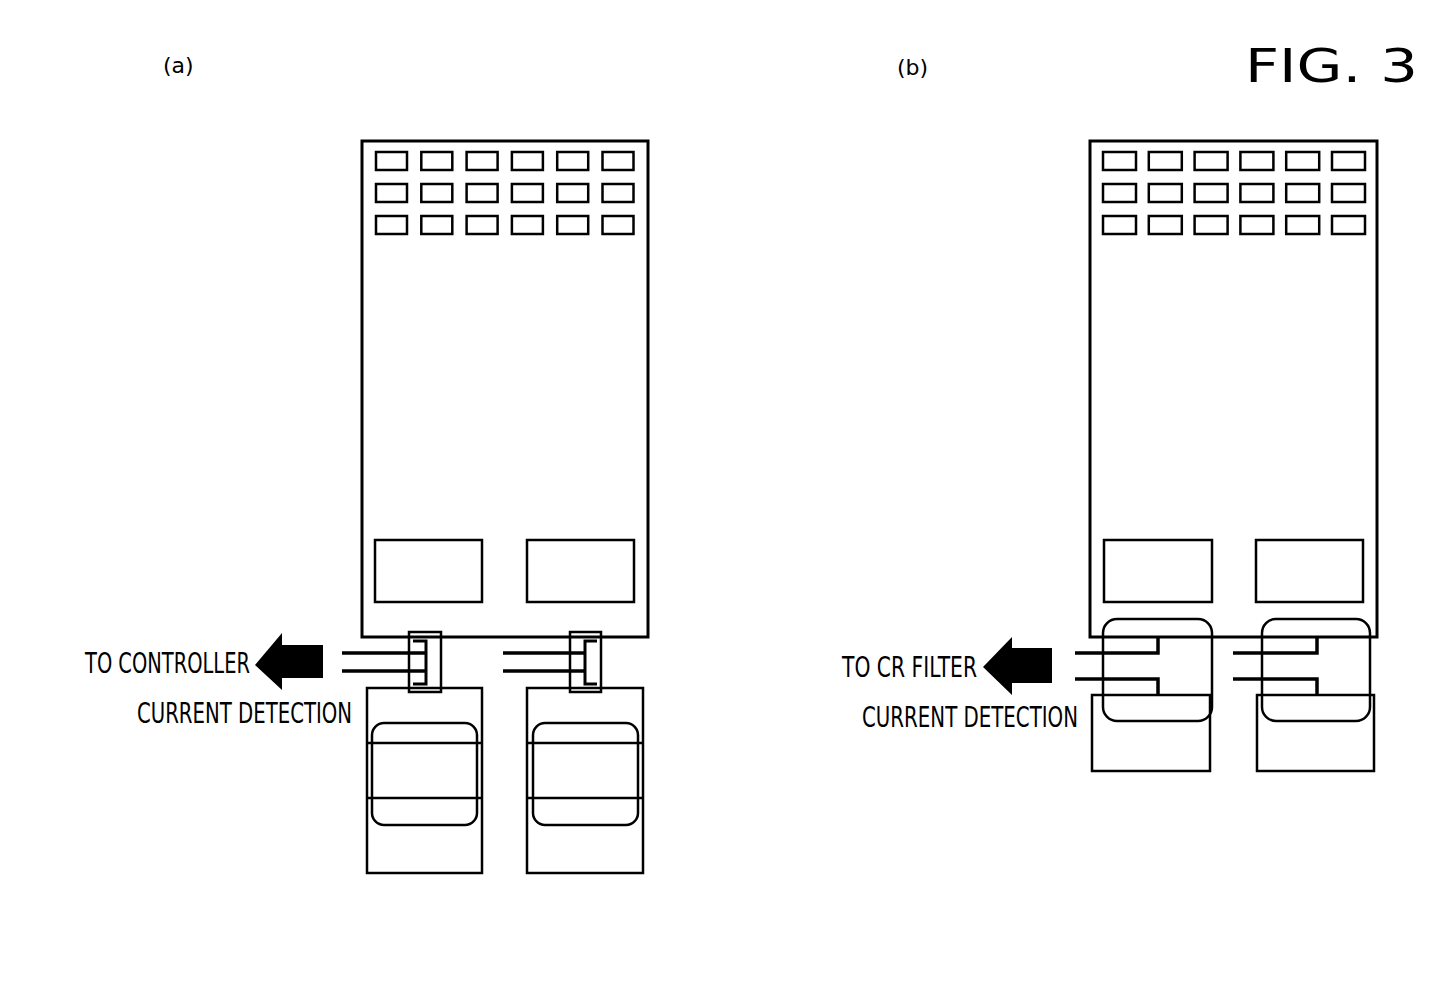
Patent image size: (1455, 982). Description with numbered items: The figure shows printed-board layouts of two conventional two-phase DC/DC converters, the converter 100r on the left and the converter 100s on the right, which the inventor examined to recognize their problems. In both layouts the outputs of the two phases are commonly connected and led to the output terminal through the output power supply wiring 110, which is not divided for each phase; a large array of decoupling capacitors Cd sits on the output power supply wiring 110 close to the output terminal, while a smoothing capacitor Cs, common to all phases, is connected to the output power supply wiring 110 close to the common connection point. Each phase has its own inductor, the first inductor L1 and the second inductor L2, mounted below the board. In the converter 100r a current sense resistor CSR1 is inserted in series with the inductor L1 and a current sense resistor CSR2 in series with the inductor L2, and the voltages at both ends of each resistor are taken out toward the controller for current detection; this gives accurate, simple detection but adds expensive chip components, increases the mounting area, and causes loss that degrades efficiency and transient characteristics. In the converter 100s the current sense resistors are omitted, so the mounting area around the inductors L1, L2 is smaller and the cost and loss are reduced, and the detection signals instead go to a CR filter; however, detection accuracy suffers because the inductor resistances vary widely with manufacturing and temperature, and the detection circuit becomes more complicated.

The output power supply wiring 110 is at (637, 387).
The decoupling capacitor Cd is at (398, 192).
The smoothing capacitor Cs is at (423, 555).
The current sense resistor CSR1 is at (412, 630).
The current sense resistor CSR2 is at (603, 662).
The inductor L1 is at (367, 770).
The inductor L2 is at (644, 770).
The DC/DC converter 100r is at (530, 929).
The DC/DC converter 100s is at (1261, 896).